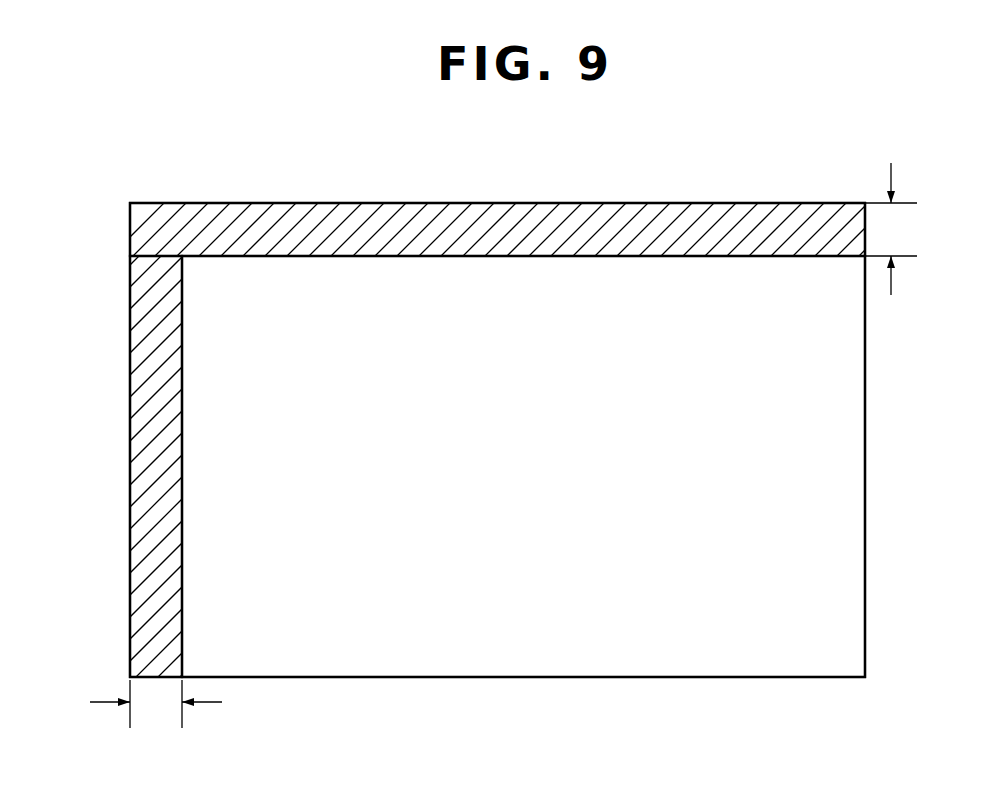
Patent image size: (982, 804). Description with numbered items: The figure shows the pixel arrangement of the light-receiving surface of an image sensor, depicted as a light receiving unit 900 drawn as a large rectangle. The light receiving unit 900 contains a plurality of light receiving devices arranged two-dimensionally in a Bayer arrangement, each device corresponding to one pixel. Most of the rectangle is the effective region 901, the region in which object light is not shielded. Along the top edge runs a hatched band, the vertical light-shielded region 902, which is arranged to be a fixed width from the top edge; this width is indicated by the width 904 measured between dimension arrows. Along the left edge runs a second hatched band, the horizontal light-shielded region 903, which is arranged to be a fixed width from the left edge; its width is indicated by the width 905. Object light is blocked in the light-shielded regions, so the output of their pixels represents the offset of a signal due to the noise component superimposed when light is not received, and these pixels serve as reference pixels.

The light receiving unit 900 is at (546, 187).
The effective region 901 is at (866, 441).
The vertical light-shielded region 902 is at (785, 205).
The horizontal light-shielded region 903 is at (153, 256).
The width 904 is at (893, 232).
The width 905 is at (156, 705).